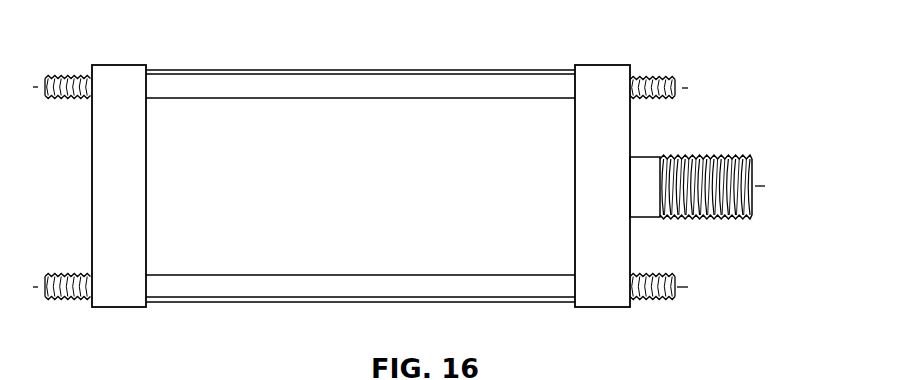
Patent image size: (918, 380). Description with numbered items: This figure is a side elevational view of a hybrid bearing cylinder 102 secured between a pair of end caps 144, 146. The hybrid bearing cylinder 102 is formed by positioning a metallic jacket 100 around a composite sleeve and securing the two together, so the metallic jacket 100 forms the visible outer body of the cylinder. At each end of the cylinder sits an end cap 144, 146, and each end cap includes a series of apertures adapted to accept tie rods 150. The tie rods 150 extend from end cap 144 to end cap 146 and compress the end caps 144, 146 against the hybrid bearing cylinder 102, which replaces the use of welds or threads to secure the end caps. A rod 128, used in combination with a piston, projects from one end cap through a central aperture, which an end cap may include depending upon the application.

The metallic jacket 100 is at (468, 120).
The hybrid bearing cylinder 102 is at (275, 114).
The rod 128 is at (712, 160).
The end cap 144 is at (602, 77).
The end cap 146 is at (123, 77).
The tie rods 150 is at (280, 285).